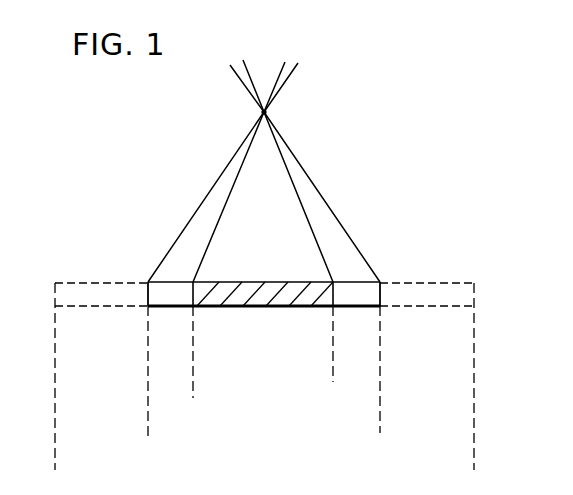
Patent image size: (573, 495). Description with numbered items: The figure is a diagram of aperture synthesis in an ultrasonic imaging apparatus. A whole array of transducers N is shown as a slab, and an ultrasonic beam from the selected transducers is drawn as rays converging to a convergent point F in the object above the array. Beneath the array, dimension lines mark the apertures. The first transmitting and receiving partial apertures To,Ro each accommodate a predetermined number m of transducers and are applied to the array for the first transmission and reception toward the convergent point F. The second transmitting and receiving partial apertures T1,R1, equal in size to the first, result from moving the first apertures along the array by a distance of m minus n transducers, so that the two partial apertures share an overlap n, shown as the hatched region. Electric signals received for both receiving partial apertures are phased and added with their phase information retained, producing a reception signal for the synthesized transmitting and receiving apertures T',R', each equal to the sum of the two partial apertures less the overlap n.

The convergent point F is at (268, 112).
The overlap between partial apertures n is at (333, 341).
The first transmitting and receiving partial apertures To,Ro is at (333, 363).
The second transmitting and receiving partial apertures T1,R1 is at (380, 392).
The synthesized transmitting and receiving apertures T',R' is at (264, 428).
The array of transducers N is at (474, 457).